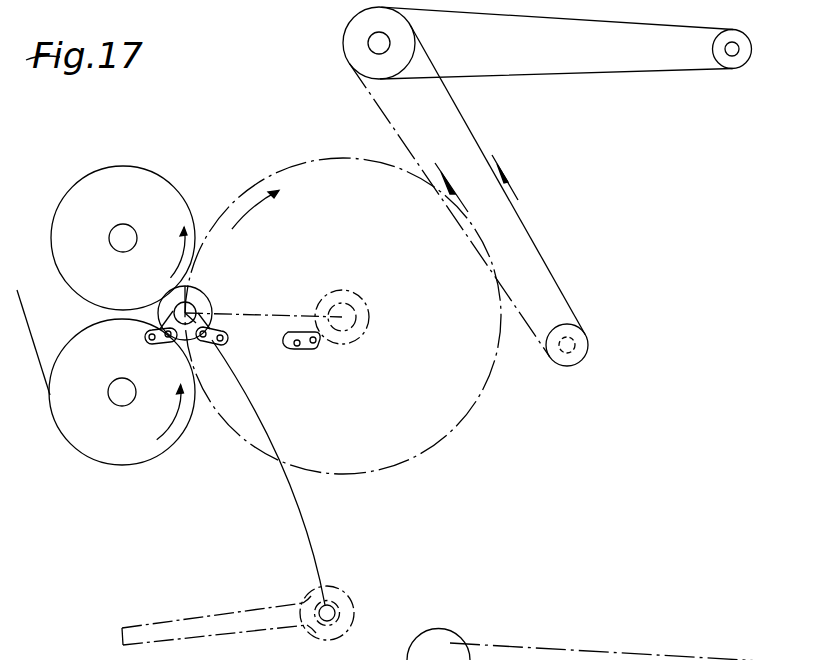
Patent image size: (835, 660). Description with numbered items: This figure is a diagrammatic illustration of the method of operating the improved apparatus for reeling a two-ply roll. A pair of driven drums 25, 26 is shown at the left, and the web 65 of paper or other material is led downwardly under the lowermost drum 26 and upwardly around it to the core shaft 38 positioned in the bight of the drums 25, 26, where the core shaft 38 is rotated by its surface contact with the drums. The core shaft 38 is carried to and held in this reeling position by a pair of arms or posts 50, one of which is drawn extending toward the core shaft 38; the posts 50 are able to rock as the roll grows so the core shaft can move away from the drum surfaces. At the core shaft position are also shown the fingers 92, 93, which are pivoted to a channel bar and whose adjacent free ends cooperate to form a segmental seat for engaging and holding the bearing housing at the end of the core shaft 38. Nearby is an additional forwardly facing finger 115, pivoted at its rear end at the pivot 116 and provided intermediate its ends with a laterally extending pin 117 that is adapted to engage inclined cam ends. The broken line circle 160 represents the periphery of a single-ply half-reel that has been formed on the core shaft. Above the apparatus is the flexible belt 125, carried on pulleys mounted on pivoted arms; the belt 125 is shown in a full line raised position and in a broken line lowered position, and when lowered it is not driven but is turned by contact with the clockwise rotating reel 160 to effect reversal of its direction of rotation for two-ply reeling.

The drum 25 is at (173, 186).
The drum 26 is at (158, 458).
The web 65 is at (29, 326).
The core shaft 38 is at (202, 291).
The finger 92 is at (150, 326).
The finger 93 is at (212, 328).
The finger 115 is at (298, 336).
The pivot 116 is at (314, 346).
The pin 117 is at (297, 348).
The belt 125 is at (587, 77).
The half-reel 160 is at (468, 418).
The post 50 is at (172, 622).